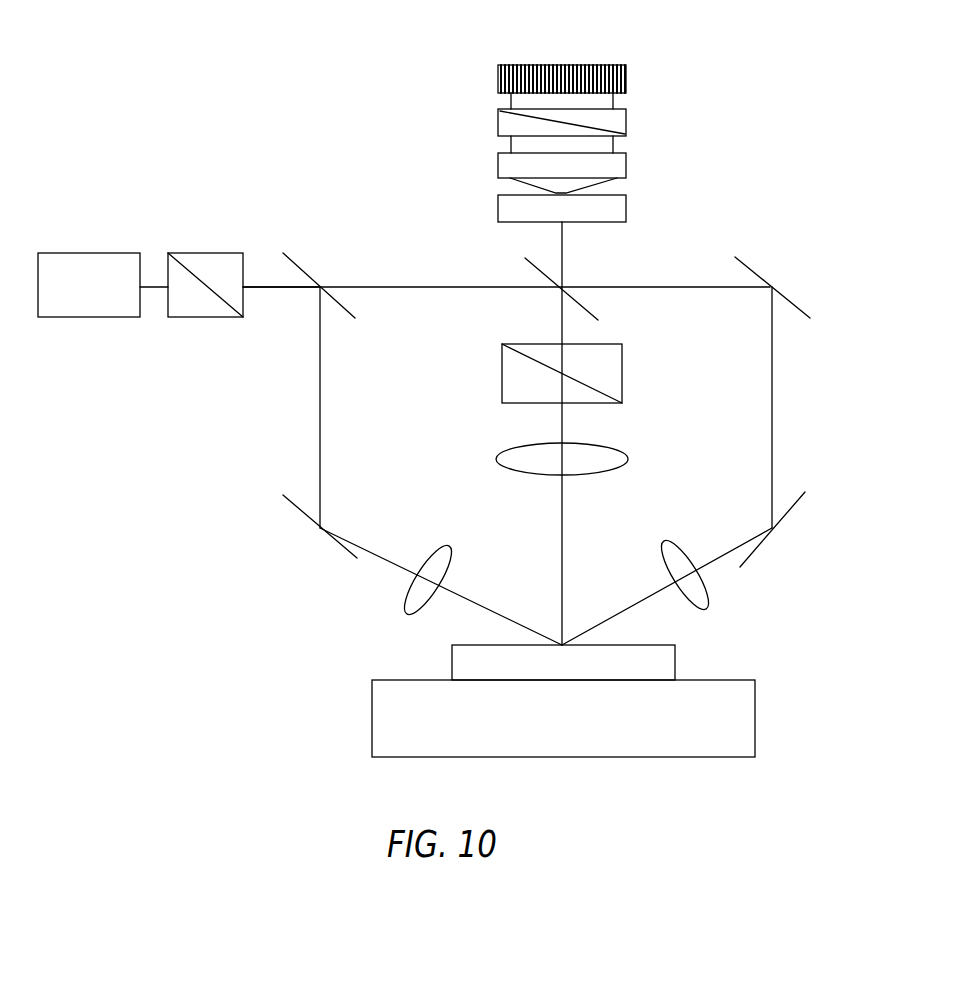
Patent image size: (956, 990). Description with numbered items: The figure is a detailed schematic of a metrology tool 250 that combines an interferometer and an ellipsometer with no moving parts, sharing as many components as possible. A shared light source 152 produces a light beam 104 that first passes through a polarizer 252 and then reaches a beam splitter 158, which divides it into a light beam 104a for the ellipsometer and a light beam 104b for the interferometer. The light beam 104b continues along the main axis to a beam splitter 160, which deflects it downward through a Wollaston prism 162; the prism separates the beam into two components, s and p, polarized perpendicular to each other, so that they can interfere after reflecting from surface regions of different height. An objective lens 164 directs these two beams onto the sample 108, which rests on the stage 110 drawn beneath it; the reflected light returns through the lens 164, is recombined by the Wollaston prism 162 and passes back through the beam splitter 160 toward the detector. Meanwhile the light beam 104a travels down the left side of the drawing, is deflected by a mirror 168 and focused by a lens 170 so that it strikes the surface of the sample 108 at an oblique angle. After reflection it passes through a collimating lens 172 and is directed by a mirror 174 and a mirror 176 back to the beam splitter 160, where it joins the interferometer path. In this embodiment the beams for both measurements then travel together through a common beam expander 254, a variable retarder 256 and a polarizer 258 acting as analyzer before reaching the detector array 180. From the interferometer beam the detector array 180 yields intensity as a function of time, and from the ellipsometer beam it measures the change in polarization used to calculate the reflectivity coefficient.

The metrology tool 250 is at (318, 80).
The light source 152 is at (116, 252).
The polarizer 252 is at (227, 252).
The beam splitter 158 is at (293, 262).
The light beam 104 is at (280, 294).
The light beam 104a is at (318, 404).
The light beam 104b is at (412, 292).
The beam splitter 160 is at (534, 262).
The mirror 176 is at (744, 263).
The Wollaston prism 162 is at (622, 373).
The objective lens 164 is at (625, 455).
The mirror 168 is at (343, 548).
The lens 170 is at (450, 542).
The collimating lens 172 is at (665, 535).
The mirror 174 is at (792, 510).
The sample 108 is at (675, 662).
The stage 110 is at (755, 742).
The detector array 180 is at (626, 79).
The polarizer 258 is at (626, 122).
The variable retarder 256 is at (626, 166).
The beam expander 254 is at (626, 210).